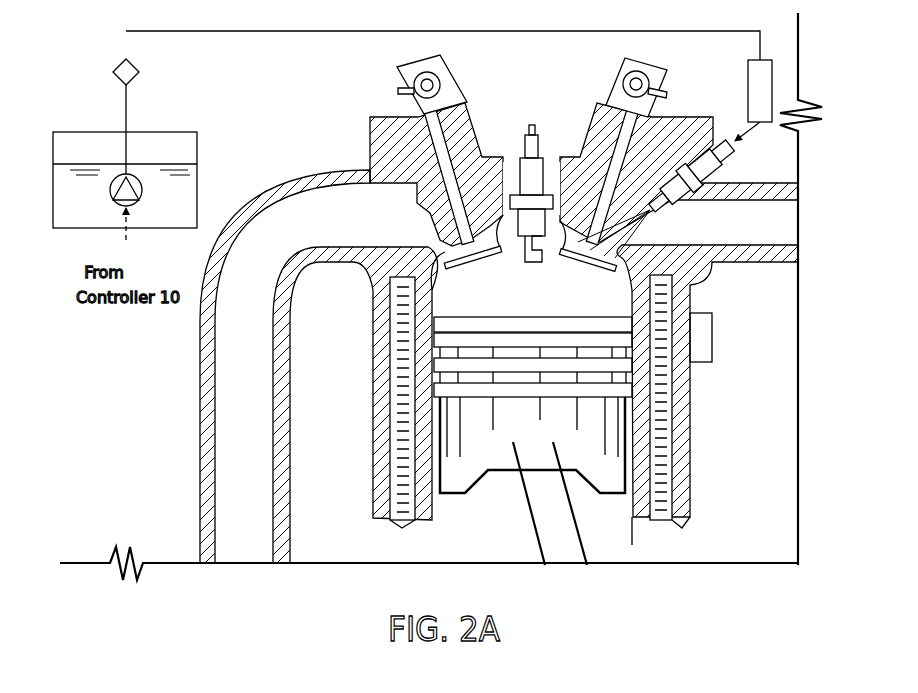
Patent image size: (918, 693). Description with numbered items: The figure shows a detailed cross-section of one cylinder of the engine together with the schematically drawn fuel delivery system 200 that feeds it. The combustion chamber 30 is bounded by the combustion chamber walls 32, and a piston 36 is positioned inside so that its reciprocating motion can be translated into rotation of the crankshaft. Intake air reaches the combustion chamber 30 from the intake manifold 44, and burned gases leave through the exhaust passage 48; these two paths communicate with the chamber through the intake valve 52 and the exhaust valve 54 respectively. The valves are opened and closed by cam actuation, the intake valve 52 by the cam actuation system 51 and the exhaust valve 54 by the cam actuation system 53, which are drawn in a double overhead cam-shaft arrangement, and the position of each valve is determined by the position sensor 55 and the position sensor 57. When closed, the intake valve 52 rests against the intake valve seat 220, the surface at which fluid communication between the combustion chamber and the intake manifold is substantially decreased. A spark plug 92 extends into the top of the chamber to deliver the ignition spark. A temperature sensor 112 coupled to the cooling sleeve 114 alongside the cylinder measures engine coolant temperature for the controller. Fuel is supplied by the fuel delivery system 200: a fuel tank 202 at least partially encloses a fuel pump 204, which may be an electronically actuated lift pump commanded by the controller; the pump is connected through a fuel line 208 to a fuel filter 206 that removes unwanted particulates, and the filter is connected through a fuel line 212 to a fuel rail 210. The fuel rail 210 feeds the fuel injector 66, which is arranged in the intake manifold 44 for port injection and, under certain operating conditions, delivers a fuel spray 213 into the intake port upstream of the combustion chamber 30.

The fuel delivery system 200 is at (108, 52).
The fuel tank 202 is at (152, 132).
The fuel pump 204 is at (145, 196).
The fuel filter 206 is at (133, 66).
The fuel line 208 is at (125, 115).
The fuel rail 210 is at (760, 124).
The fuel line 212 is at (192, 32).
The fuel spray 213 is at (617, 241).
The combustion chamber 30 is at (528, 280).
The combustion chamber walls 32 is at (432, 498).
The piston 36 is at (535, 455).
The intake manifold 44 is at (737, 231).
The exhaust passage 48 is at (385, 231).
The cam actuation system 51 is at (615, 88).
The intake valve 52 is at (620, 142).
The cam actuation system 53 is at (450, 92).
The exhaust valve 54 is at (448, 158).
The position sensor 55 is at (666, 90).
The position sensor 57 is at (398, 88).
The fuel injector 66 is at (708, 172).
The spark plug 92 is at (542, 150).
The temperature sensor 112 is at (712, 350).
The cooling sleeve 114 is at (672, 457).
The intake valve seat 220 is at (583, 268).